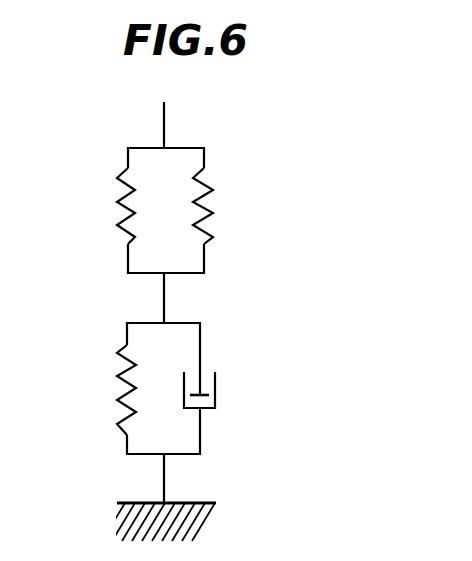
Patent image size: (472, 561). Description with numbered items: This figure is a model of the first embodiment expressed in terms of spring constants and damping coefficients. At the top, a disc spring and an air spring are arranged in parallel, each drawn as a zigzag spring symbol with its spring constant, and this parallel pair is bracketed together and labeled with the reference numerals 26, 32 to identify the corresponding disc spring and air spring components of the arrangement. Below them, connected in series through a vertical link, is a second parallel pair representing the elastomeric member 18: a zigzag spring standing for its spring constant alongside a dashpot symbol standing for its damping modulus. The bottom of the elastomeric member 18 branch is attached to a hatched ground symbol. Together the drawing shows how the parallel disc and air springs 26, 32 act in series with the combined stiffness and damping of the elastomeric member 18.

The pad spring element 26 is at (217, 213).
The arm spring element 32 is at (248, 140).
The elastomeric member 18 is at (247, 317).